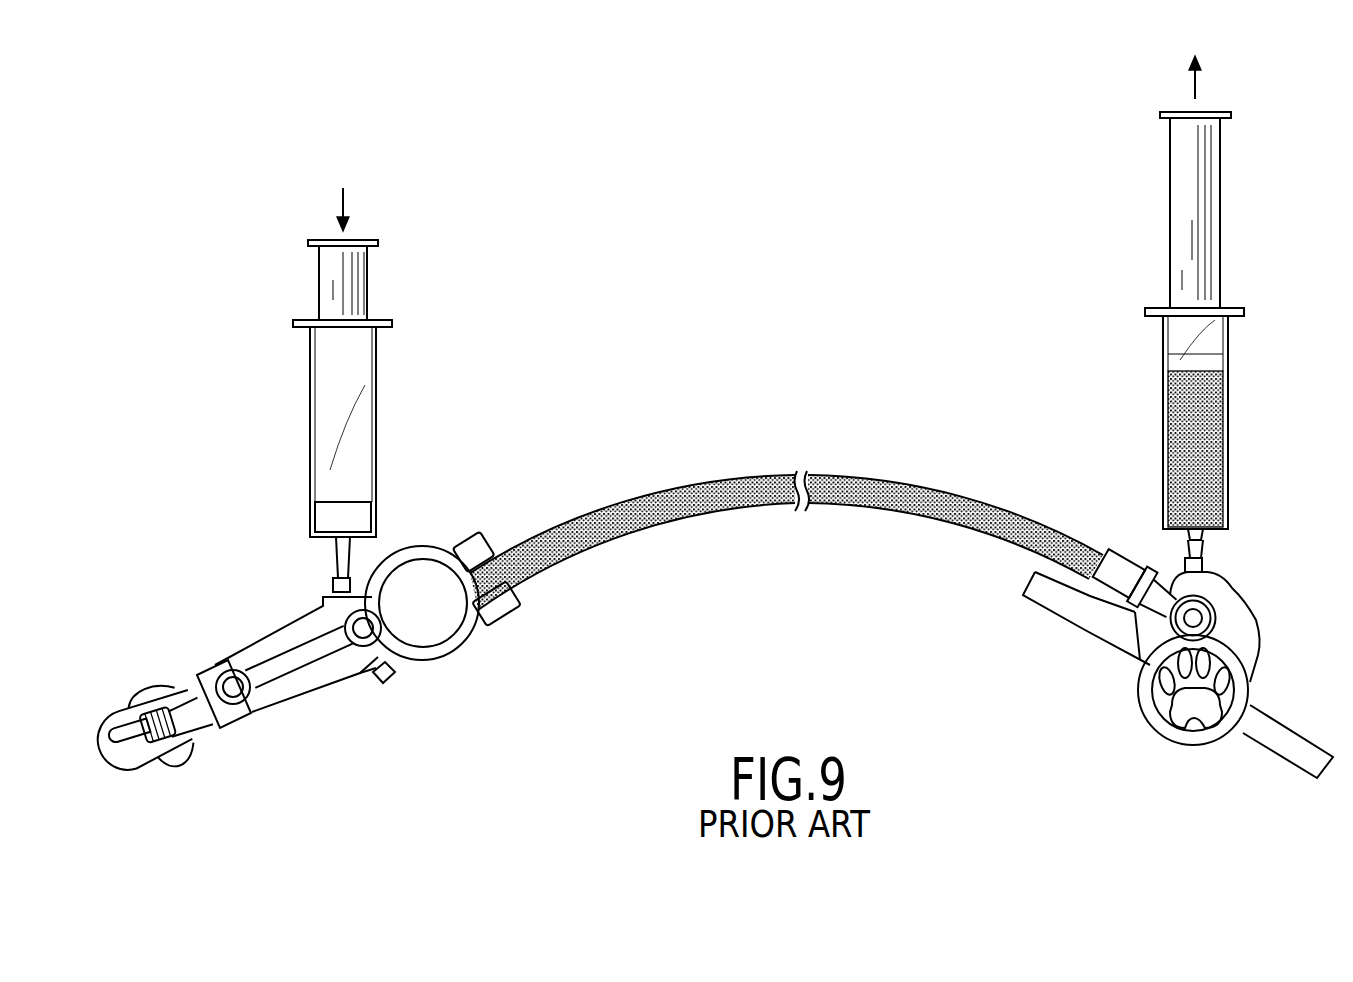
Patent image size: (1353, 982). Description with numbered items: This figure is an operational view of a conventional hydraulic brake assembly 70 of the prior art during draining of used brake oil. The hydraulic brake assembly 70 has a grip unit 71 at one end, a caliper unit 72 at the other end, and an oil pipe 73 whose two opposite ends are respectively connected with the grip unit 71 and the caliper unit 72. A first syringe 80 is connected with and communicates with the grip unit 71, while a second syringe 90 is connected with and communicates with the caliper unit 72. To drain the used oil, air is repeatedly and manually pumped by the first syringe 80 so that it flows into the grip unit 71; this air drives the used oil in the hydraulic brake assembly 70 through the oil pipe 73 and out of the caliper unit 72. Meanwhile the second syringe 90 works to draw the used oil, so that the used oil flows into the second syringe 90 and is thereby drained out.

The hydraulic brake assembly 70 is at (661, 436).
The grip unit 71 is at (458, 643).
The caliper unit 72 is at (1153, 710).
The oil pipe 73 is at (900, 490).
The first syringe 80 is at (370, 408).
The second syringe 90 is at (1223, 409).